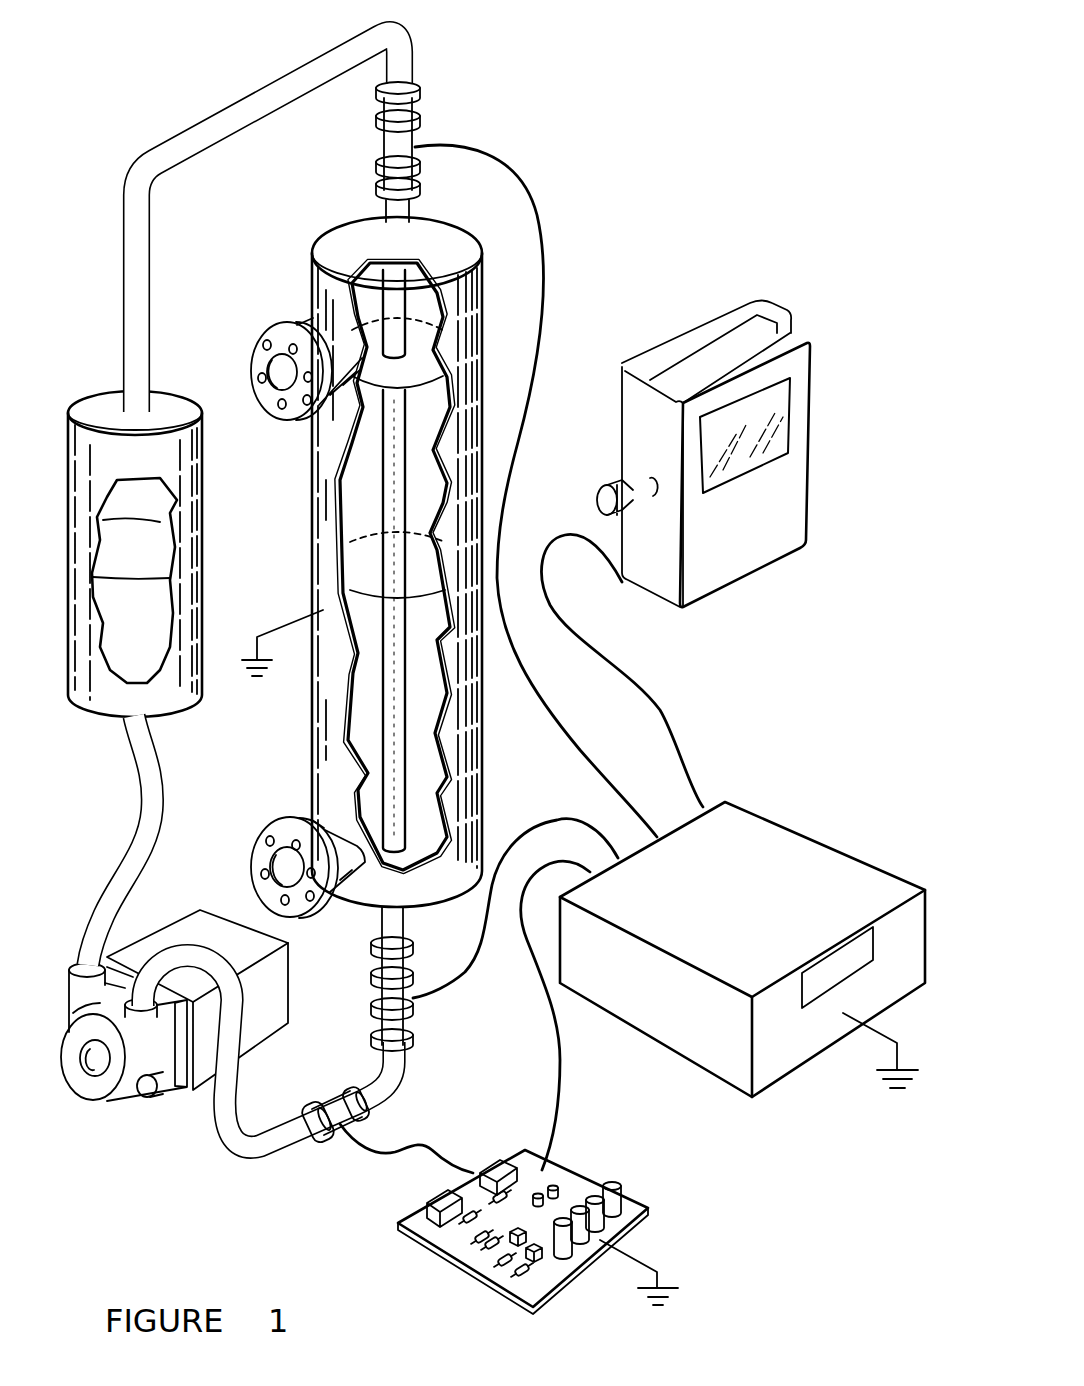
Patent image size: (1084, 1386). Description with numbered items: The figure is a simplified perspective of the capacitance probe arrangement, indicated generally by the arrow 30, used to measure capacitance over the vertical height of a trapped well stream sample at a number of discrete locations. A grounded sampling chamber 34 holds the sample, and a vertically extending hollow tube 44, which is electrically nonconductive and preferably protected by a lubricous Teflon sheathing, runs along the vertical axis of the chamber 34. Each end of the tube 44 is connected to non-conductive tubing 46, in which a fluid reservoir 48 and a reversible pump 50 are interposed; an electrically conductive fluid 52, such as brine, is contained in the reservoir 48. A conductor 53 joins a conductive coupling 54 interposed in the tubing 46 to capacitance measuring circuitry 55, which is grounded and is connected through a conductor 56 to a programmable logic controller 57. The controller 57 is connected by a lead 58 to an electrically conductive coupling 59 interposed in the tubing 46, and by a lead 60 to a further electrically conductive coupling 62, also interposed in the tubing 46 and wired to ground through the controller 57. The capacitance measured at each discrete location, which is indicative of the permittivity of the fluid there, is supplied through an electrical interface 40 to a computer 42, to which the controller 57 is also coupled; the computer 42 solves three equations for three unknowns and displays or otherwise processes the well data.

The electrostatic coalescer system 30 is at (165, 1140).
The sampling chamber 34 is at (462, 366).
The electrical interface 40 is at (783, 1045).
The computer 42 is at (750, 542).
The hollow tube 44 is at (400, 303).
The tubing 46 is at (143, 258).
The fluid reservoir 48 is at (170, 458).
The reversible pump 50 is at (93, 1080).
The electrically conductive fluid 52 is at (148, 650).
The conductor 53 is at (425, 1143).
The conductive coupling 54 is at (315, 1143).
The capacitance measuring circuitry 55 is at (542, 1273).
The conductor 56 is at (563, 1068).
The programmable logic controller 57 is at (768, 840).
The lead 58 is at (448, 985).
The electrically conductive coupling 59 is at (369, 1014).
The lead 60 is at (546, 245).
The electrically conductive coupling 62 is at (407, 143).